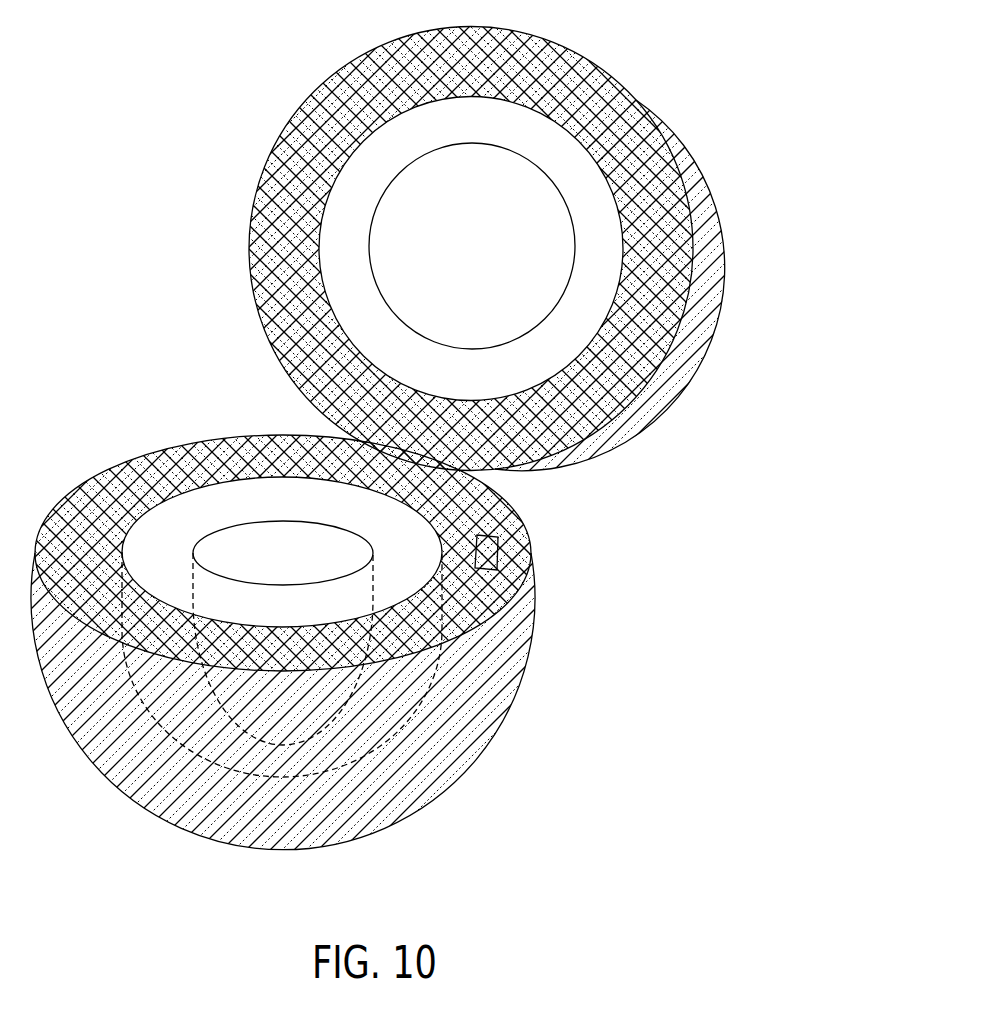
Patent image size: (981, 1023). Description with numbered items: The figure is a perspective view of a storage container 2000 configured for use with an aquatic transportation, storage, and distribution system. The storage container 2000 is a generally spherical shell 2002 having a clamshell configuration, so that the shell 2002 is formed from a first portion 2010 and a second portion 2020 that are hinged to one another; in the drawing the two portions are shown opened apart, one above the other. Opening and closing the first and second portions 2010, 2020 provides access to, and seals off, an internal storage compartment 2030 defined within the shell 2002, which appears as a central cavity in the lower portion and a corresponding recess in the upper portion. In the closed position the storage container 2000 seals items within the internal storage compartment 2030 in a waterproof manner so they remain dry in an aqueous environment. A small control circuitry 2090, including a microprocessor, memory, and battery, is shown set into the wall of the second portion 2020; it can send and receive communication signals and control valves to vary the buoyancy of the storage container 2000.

The storage container 2000 is at (112, 227).
The first portion 2010 is at (697, 375).
The second portion 2020 is at (467, 773).
The internal storage compartment 2030 is at (443, 228).
The spherical shell 2002 is at (525, 685).
The control circuitry 2090 is at (498, 551).